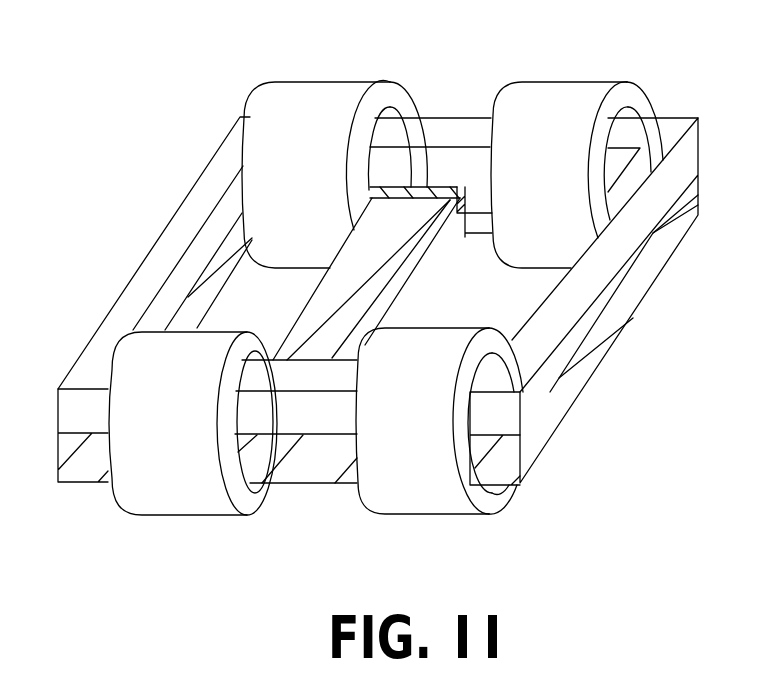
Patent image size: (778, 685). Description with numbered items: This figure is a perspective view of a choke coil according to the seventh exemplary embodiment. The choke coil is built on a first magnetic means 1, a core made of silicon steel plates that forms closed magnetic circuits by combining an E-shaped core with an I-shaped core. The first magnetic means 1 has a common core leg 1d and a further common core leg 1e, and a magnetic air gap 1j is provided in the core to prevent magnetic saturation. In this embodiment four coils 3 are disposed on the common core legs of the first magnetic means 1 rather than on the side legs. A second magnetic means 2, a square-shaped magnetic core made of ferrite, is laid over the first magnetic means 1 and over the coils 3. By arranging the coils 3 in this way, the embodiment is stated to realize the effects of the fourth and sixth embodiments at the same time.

The first magnetic means 1 is at (548, 427).
The common core leg 1d is at (320, 475).
The common core leg 1e is at (482, 203).
The magnetic air gap 1j is at (493, 215).
The second magnetic means 2 is at (168, 243).
The coil 3 is at (320, 97).